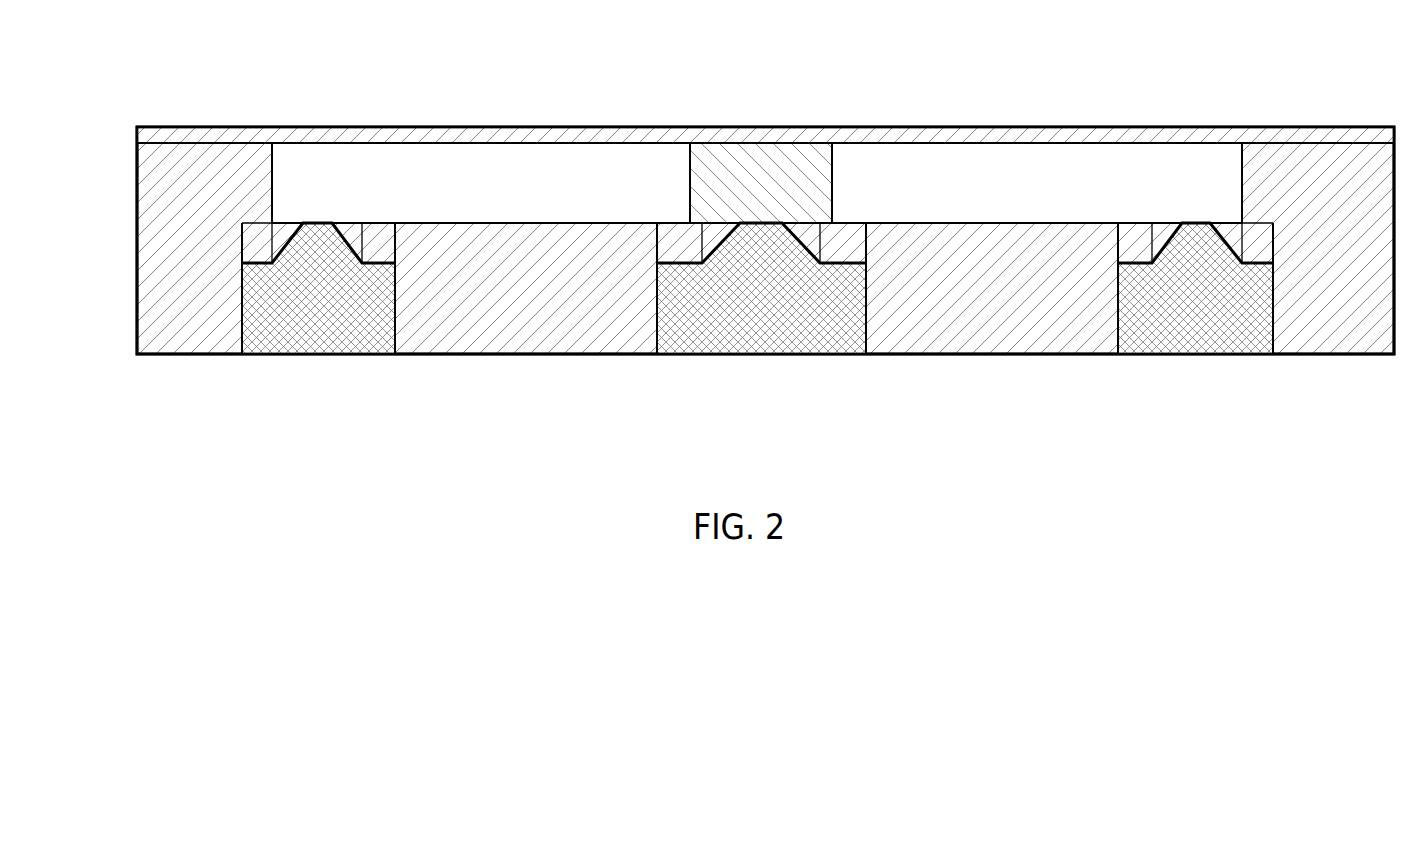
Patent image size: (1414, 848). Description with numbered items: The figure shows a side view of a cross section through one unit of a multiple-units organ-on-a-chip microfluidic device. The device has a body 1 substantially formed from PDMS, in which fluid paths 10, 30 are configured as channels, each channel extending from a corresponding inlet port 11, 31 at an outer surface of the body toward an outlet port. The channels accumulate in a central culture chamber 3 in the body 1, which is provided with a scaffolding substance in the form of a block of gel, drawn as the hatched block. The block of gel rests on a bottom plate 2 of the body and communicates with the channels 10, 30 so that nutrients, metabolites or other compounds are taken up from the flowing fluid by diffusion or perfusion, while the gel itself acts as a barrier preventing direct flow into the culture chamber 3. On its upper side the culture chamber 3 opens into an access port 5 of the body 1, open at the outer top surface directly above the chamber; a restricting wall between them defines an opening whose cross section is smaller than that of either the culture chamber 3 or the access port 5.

The body 1 is at (168, 246).
The bottom plate 2 is at (525, 137).
The culture chamber 3 is at (762, 174).
The access port 5 is at (762, 322).
The fluid path 10 is at (433, 173).
The fluid path 30 is at (995, 174).
The inlet port 11 is at (320, 322).
The inlet port 31 is at (1199, 322).